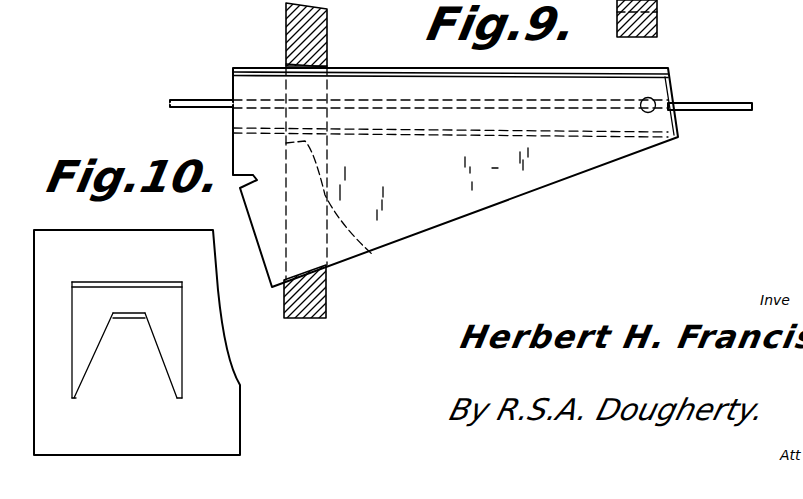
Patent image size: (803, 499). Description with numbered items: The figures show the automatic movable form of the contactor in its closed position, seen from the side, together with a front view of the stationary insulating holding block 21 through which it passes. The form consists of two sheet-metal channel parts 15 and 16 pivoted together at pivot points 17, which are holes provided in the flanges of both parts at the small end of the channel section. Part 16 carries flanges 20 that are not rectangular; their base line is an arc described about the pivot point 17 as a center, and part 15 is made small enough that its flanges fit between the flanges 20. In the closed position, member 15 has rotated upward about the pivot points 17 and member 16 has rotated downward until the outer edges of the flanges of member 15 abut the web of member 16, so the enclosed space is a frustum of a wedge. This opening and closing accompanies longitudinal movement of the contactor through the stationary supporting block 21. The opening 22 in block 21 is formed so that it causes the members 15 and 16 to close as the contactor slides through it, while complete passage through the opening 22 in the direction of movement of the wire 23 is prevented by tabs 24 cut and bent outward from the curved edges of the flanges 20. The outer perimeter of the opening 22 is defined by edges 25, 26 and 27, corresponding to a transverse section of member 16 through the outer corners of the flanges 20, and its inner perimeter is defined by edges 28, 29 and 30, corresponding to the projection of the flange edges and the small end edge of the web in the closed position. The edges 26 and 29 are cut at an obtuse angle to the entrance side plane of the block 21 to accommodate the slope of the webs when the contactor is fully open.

In FIG. 9, the part 15 is at (573, 138).
In FIG. 9, the part 16 is at (366, 67).
In FIG. 9, the pivot point 17 is at (652, 110).
In FIG. 9, the flanges 20 is at (491, 204).
In FIG. 9, the stationary supporting block 21 is at (286, 32).
In FIG. 10, the stationary supporting block 21 is at (170, 222).
In FIG. 10, the opening 22 is at (120, 300).
In FIG. 9, the wire 23 is at (188, 97).
In FIG. 9, the tabs 24 is at (250, 178).
In FIG. 10, the edge 25 is at (73, 397).
In FIG. 9, the edge 26 is at (286, 63).
In FIG. 10, the edge 26 is at (93, 282).
In FIG. 10, the edge 27 is at (182, 372).
In FIG. 10, the edge 28 is at (83, 381).
In FIG. 9, the edge 29 is at (347, 218).
In FIG. 10, the edge 29 is at (128, 318).
In FIG. 10, the edge 30 is at (175, 397).